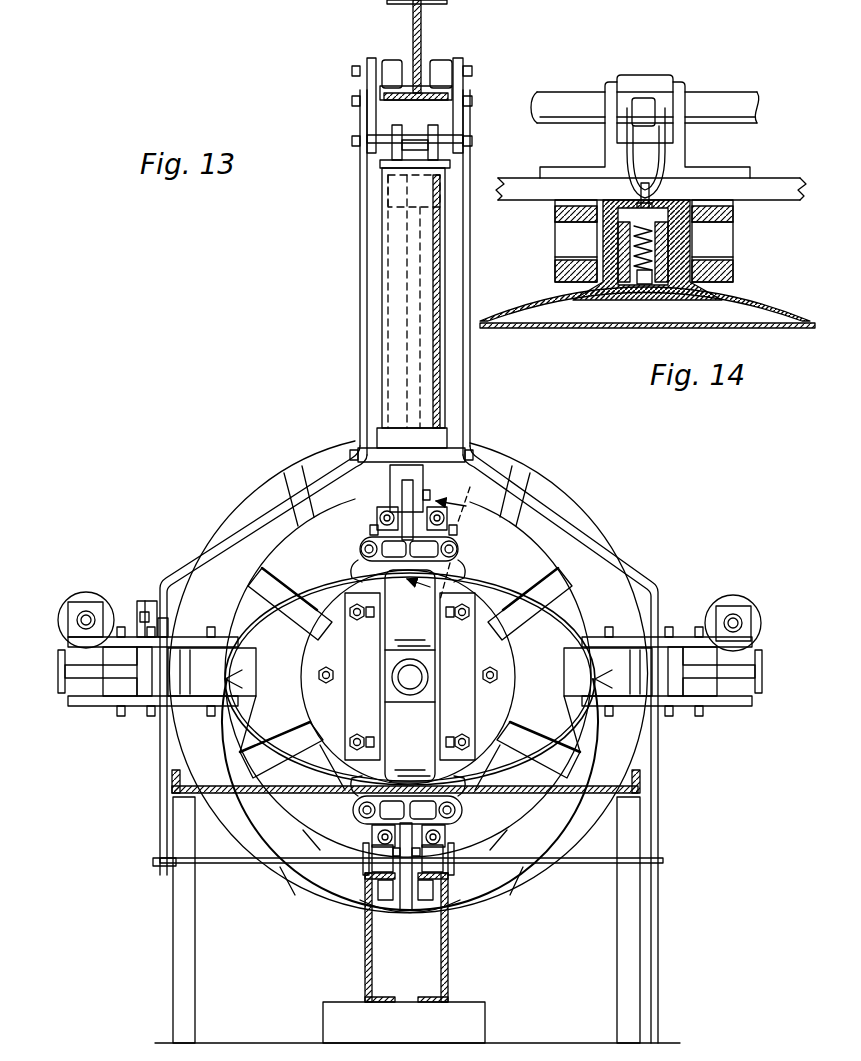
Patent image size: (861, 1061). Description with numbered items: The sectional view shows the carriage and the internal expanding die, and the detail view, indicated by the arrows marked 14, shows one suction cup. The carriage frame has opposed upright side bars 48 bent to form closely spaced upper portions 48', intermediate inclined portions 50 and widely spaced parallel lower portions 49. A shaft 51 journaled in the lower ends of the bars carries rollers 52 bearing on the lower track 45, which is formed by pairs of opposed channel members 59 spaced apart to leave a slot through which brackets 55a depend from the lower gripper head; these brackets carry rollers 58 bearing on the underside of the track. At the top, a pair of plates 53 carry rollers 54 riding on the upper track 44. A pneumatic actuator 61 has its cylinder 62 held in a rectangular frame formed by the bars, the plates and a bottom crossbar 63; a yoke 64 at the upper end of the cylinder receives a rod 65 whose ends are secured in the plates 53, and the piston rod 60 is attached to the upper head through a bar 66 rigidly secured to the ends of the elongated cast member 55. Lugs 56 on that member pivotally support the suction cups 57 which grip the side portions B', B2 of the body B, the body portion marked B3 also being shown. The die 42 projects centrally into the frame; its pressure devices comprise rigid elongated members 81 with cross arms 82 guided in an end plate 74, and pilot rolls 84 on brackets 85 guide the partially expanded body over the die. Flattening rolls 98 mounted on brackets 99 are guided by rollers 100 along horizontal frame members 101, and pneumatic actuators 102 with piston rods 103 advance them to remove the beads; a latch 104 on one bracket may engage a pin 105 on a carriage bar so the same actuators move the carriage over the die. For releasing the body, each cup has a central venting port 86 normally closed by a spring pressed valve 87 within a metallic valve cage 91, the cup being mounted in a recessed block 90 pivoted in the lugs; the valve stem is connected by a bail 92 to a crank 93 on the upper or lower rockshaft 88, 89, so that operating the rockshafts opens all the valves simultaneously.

In FIG. 13, the upper track 44 is at (423, 44).
In FIG. 13, the rollers 54 is at (393, 66).
In FIG. 13, the plates 53 is at (463, 87).
In FIG. 13, the rod 65 is at (414, 137).
In FIG. 13, the yoke 64 is at (393, 152).
In FIG. 13, the side bars 48 is at (333, 278).
In FIG. 13, the upper portions 48' is at (488, 272).
In FIG. 13, the cylinder 62 is at (383, 327).
In FIG. 13, the pneumatic actuator 61 is at (378, 362).
In FIG. 13, the piston rod 60 is at (406, 382).
In FIG. 13, the bottom crossbar 63 is at (461, 453).
In FIG. 13, the intermediate inclined portions 50 is at (208, 568).
In FIG. 13, the end plate 74 is at (583, 528).
In FIG. 13, the die 42 is at (517, 670).
In FIG. 13, the bar 66 is at (405, 506).
In FIG. 13, the elongated member 55 is at (401, 513).
In FIG. 14, the elongated member 55 is at (780, 189).
In FIG. 13, the upper rockshaft 88 is at (377, 518).
In FIG. 14, the upper rockshaft 88 is at (757, 106).
In FIG. 13, the crank 93 is at (369, 529).
In FIG. 14, the crank 93 is at (632, 112).
In FIG. 13, the section line 14 is at (452, 547).
In FIG. 13, the lugs 56 is at (361, 549).
In FIG. 14, the lugs 56 is at (560, 272).
In FIG. 13, the suction cups 57 is at (355, 573).
In FIG. 13, the side portion of body B' is at (410, 699).
In FIG. 13, the side portion of body B2 is at (527, 746).
In FIG. 13, the bag end B3 is at (597, 678).
In FIG. 13, the rigid elongated members 81 is at (266, 582).
In FIG. 13, the flattening rolls 98 is at (244, 699).
In FIG. 13, the brackets 99 is at (80, 641).
In FIG. 13, the rollers 100 is at (143, 697).
In FIG. 13, the horizontal frame members 101 is at (66, 694).
In FIG. 13, the pneumatic actuators 102 is at (85, 596).
In FIG. 13, the piston rods 103 is at (84, 617).
In FIG. 13, the latch 104 is at (156, 604).
In FIG. 13, the pin 105 is at (141, 615).
In FIG. 13, the cross arms 82 is at (508, 703).
In FIG. 13, the pilot or guide rolls 84 is at (396, 627).
In FIG. 13, the brackets 85 is at (350, 661).
In FIG. 13, the lower portions 49 is at (160, 810).
In FIG. 13, the shaft 51 is at (235, 863).
In FIG. 13, the rollers 52 is at (454, 876).
In FIG. 13, the lower rockshaft 89 is at (371, 838).
In FIG. 13, the brackets 55a is at (407, 911).
In FIG. 13, the rollers 58 is at (380, 901).
In FIG. 13, the channel members 59 is at (366, 976).
In FIG. 13, the lower track 45 is at (364, 936).
In FIG. 14, the bail 92 is at (684, 158).
In FIG. 14, the recessed blocks 90 is at (676, 222).
In FIG. 14, the metallic valve cages 91 is at (663, 253).
In FIG. 14, the spring pressed valve 87 is at (644, 294).
In FIG. 14, the central venting port 86 is at (648, 292).
In FIG. 14, the body B is at (647, 340).